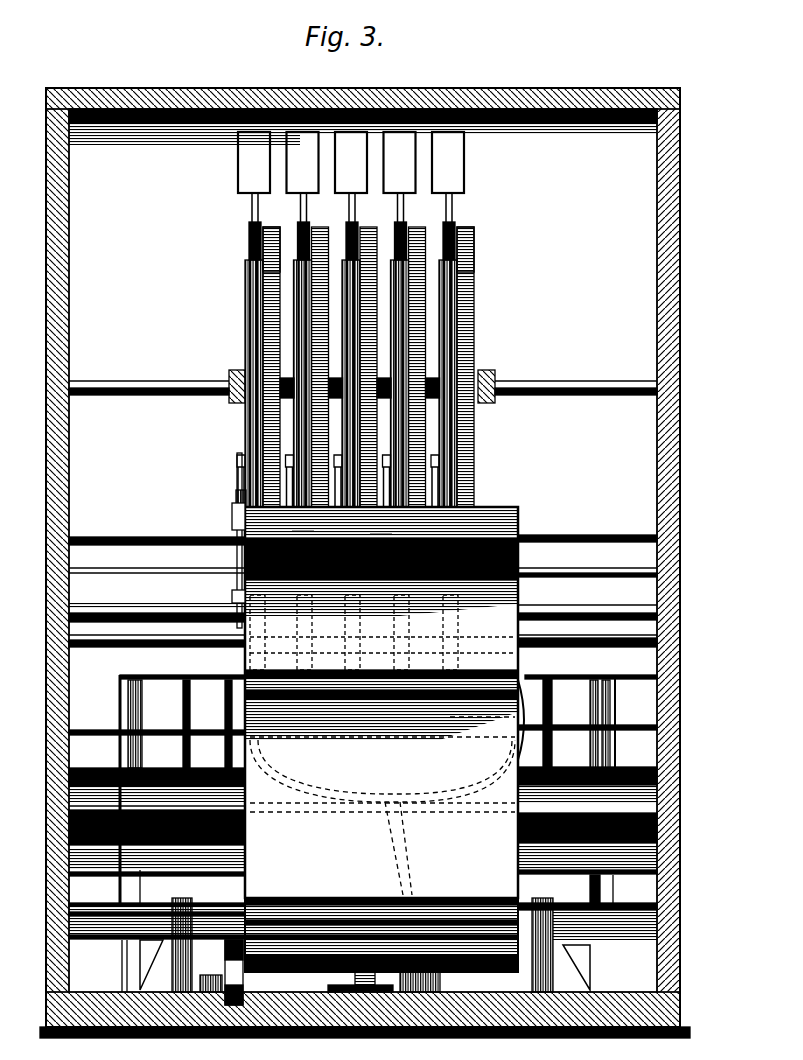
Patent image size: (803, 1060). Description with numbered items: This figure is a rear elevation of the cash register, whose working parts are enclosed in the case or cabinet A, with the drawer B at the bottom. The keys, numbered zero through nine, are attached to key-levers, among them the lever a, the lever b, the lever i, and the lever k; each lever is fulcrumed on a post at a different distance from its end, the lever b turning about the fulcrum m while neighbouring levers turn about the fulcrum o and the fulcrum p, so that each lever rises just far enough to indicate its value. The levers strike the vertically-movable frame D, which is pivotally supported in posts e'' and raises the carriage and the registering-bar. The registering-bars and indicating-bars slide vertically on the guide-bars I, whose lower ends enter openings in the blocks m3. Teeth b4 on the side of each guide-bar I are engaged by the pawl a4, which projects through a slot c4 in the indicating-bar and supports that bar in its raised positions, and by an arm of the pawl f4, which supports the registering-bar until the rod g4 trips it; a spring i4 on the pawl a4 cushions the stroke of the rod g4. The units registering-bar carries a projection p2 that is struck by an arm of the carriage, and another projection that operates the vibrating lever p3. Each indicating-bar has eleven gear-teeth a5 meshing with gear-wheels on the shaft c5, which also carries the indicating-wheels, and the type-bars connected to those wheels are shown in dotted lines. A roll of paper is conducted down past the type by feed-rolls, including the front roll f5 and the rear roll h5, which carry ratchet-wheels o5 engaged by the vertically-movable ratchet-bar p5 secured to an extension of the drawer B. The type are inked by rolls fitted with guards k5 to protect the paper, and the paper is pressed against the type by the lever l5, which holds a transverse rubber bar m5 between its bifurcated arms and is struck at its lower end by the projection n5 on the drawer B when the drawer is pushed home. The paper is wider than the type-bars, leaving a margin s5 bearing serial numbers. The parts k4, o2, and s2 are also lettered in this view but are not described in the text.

The case or cabinet A is at (365, 563).
The drawer B is at (157, 931).
The guards k5 is at (351, 162).
The guide-bars I is at (445, 210).
The teeth of the guide-bar b4 is at (255, 250).
The key-lever b is at (476, 240).
The fulcrum m is at (272, 308).
The fulcrum o is at (447, 350).
The shaft c5 is at (505, 382).
The pawl a4 is at (238, 462).
The spring i4 is at (236, 484).
The margin s5 is at (512, 508).
The rod g4 is at (236, 550).
The rails k4 is at (238, 648).
The pawl f4 is at (246, 672).
The slot c4 is at (382, 595).
The fulcrum p is at (381, 528).
The gear-teeth a5 is at (303, 524).
The rear feed-roll h5 is at (466, 897).
The lever l5 is at (528, 695).
The posts e'' is at (372, 721).
The vertically-movable frame D is at (183, 707).
The key-lever k is at (183, 746).
The key-lever i is at (226, 746).
The key-lever a is at (587, 722).
The bar o2 is at (108, 870).
The blocks m3 is at (160, 870).
The transverse bar m5 is at (575, 845).
The feed-roll f5 is at (316, 897).
The ratchet-wheels o5 is at (191, 945).
The ratchet-bar p5 is at (244, 980).
The vibrating lever p3 is at (212, 992).
The projection p2 is at (358, 992).
The spring s2 is at (380, 992).
The projection n5 is at (442, 985).